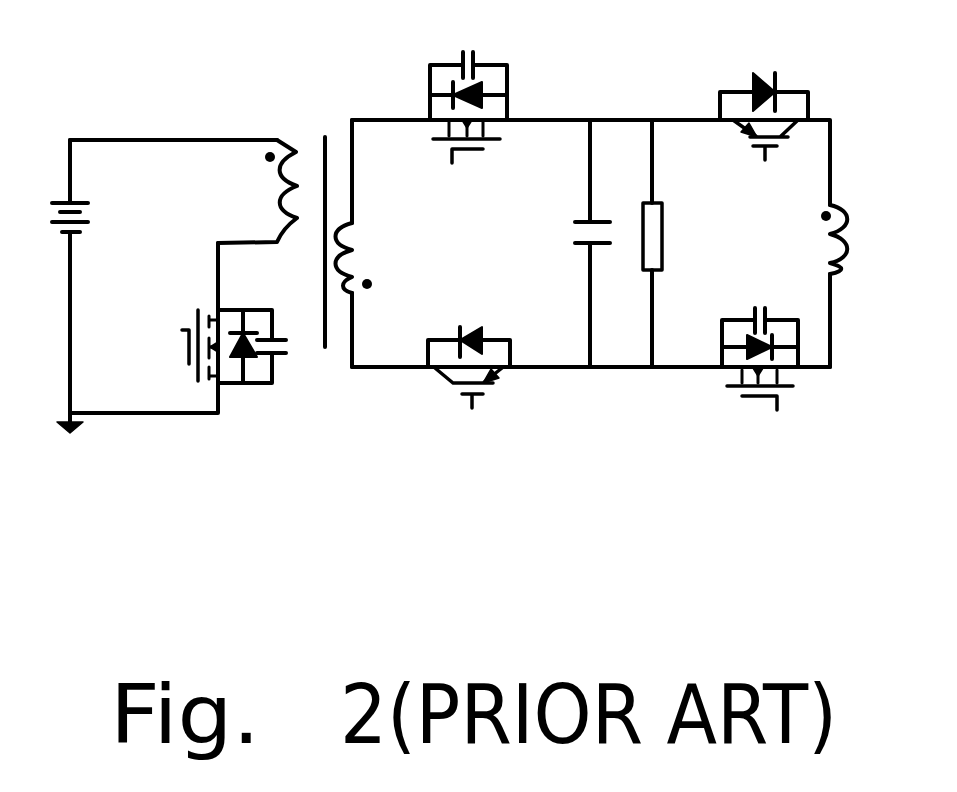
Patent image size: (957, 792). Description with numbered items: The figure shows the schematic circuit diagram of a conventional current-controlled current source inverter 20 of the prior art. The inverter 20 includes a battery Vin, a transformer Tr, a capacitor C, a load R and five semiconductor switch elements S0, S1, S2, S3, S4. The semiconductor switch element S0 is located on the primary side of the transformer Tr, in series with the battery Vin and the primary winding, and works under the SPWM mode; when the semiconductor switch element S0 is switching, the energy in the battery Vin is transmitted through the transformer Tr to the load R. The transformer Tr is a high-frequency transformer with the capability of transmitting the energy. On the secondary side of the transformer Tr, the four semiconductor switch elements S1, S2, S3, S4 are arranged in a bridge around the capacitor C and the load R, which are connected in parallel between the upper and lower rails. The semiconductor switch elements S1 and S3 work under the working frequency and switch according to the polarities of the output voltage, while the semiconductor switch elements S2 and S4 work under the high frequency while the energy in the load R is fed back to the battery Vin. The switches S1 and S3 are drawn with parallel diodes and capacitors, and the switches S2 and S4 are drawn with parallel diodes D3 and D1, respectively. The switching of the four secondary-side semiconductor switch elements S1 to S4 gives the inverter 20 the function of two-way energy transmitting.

The battery Vin is at (47, 276).
The transformer Tr is at (532, 219).
The semiconductor switch element S0 is at (216, 346).
The inverter 20 is at (640, 247).
The semiconductor switch element S1 is at (453, 107).
The semiconductor switch element S2 is at (755, 142).
The semiconductor switch element S3 is at (755, 367).
The semiconductor switch element S4 is at (453, 390).
The diode D1 is at (469, 332).
The diode D3 is at (764, 80).
The capacitor C is at (571, 243).
The load R is at (665, 243).